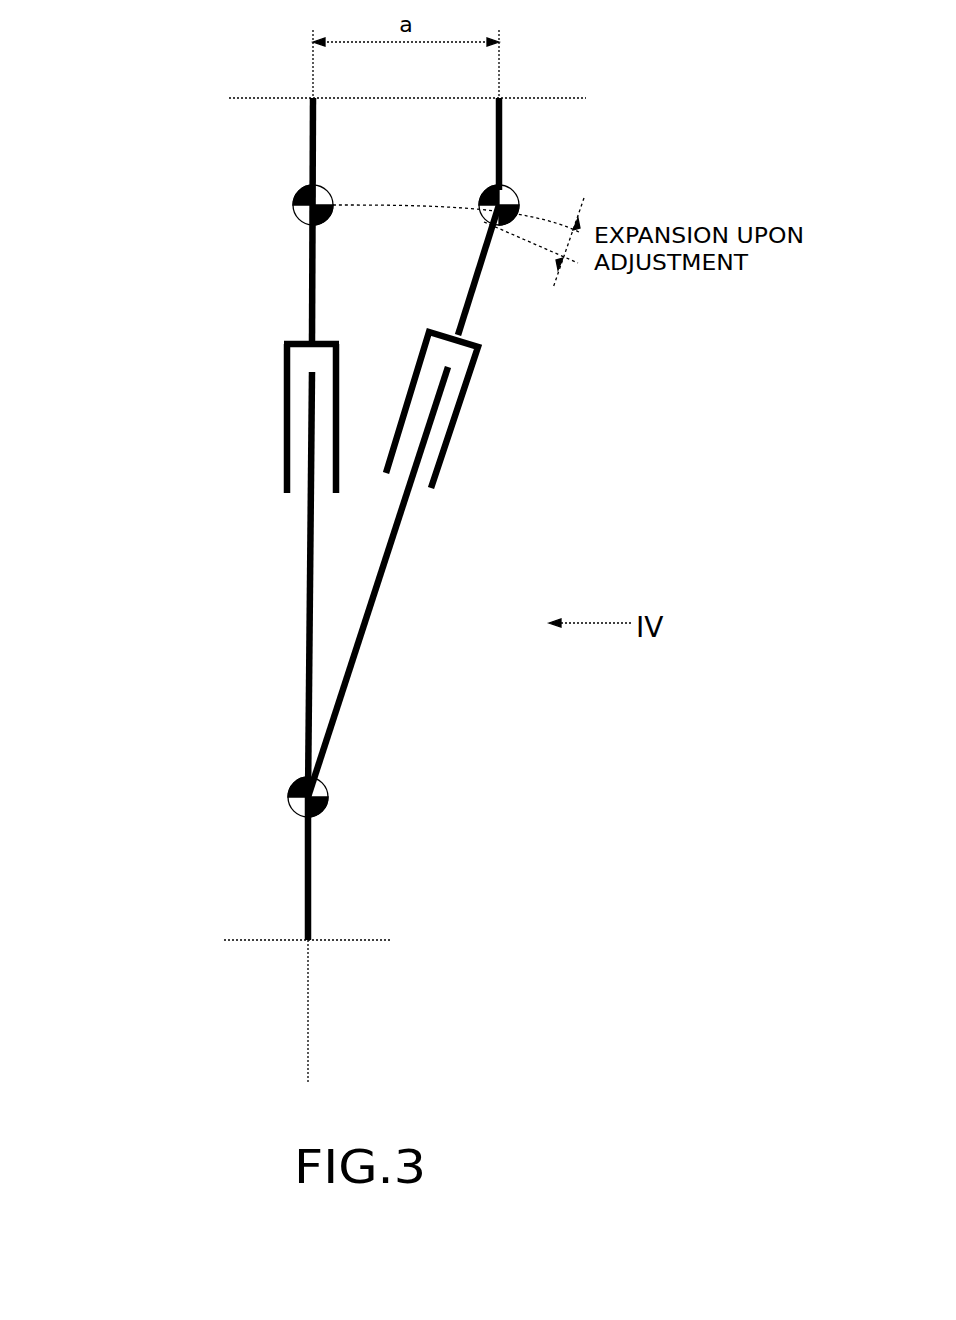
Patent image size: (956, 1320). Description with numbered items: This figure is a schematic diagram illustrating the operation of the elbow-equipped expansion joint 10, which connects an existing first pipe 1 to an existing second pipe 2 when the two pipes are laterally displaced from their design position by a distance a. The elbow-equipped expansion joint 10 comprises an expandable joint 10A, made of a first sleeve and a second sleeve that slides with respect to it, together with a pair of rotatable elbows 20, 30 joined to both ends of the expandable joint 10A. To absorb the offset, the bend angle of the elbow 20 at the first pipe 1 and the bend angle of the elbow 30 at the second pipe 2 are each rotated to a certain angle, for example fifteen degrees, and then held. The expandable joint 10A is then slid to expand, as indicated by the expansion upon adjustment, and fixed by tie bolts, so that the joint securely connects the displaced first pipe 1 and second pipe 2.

The first pipe 1 is at (503, 135).
The second pipe 2 is at (311, 879).
The elbow-equipped expansion joint 10 is at (223, 520).
The expandable joint 10A is at (462, 406).
The elbow 20 is at (514, 195).
The elbow 30 is at (327, 788).